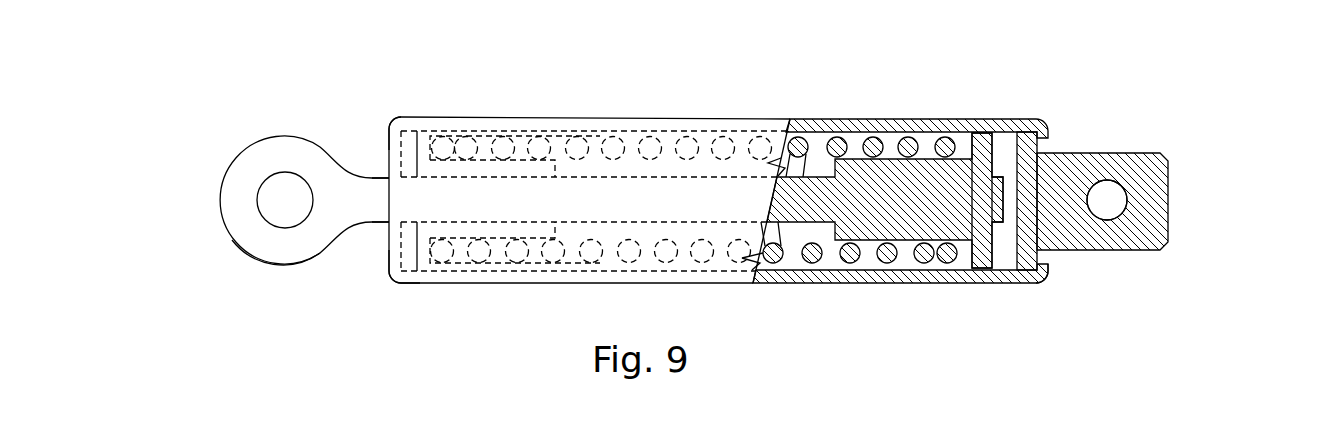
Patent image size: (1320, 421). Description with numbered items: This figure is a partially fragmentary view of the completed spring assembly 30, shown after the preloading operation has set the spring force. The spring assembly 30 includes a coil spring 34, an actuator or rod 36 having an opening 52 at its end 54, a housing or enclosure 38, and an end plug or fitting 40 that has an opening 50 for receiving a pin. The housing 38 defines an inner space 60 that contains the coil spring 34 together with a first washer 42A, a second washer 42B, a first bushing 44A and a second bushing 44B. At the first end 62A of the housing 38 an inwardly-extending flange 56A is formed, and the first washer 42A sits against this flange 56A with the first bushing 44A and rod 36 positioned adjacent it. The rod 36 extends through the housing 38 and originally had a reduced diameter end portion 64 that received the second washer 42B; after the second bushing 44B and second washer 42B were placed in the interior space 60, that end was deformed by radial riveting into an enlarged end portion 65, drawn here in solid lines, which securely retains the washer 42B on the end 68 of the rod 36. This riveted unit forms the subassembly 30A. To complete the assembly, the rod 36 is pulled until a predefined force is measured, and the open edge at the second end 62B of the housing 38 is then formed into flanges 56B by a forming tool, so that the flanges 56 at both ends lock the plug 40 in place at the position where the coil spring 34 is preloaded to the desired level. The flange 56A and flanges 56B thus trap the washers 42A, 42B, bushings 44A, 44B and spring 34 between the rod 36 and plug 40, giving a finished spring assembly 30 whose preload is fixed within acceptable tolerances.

The spring assembly 30 is at (876, 114).
The subassembly 30A is at (556, 288).
The coil spring 34 is at (908, 147).
The rod 36 is at (271, 264).
The housing 38 is at (647, 117).
The end plug 40 is at (1165, 250).
The first washer 42A is at (410, 143).
The second washer 42B is at (985, 133).
The first bushing 44A is at (425, 143).
The second bushing 44B is at (937, 137).
The opening 50 is at (1122, 202).
The opening 52 is at (260, 200).
The end 54 is at (232, 163).
The flange 56 is at (383, 138).
The inwardly-extending flange 56A is at (383, 270).
The flanges 56B is at (1050, 276).
The inner space 60 is at (817, 150).
The first end 62A is at (392, 290).
The second end 62B is at (1032, 280).
The reduced diameter end portion 64 is at (1007, 190).
The enlarged end portion 65 is at (1003, 200).
The end 68 is at (948, 200).